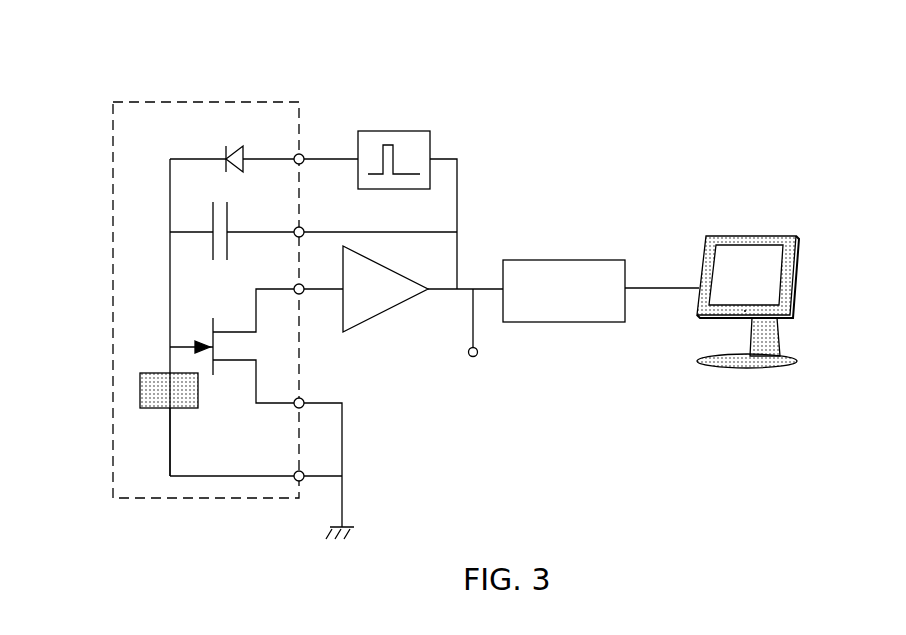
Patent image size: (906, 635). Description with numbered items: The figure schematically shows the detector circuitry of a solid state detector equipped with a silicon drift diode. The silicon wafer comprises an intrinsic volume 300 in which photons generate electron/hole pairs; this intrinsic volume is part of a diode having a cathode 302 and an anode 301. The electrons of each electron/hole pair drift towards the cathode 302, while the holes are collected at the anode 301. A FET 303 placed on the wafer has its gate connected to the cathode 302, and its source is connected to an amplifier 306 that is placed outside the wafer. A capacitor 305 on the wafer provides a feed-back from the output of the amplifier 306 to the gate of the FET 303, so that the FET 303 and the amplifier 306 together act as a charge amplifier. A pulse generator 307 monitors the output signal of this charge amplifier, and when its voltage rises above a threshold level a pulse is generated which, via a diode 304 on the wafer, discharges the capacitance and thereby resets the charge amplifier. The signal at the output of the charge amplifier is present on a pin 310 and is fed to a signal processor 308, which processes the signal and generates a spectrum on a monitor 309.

The intrinsic volume 300 is at (224, 102).
The anode 301 is at (155, 408).
The cathode 302 is at (153, 372).
The FET 303 is at (188, 332).
The diode 304 is at (213, 146).
The capacitor 305 is at (203, 230).
The amplifier 306 is at (385, 290).
The pulse generator 307 is at (405, 155).
The signal processor 308 is at (563, 275).
The monitor 309 is at (746, 268).
The pin 310 is at (478, 352).